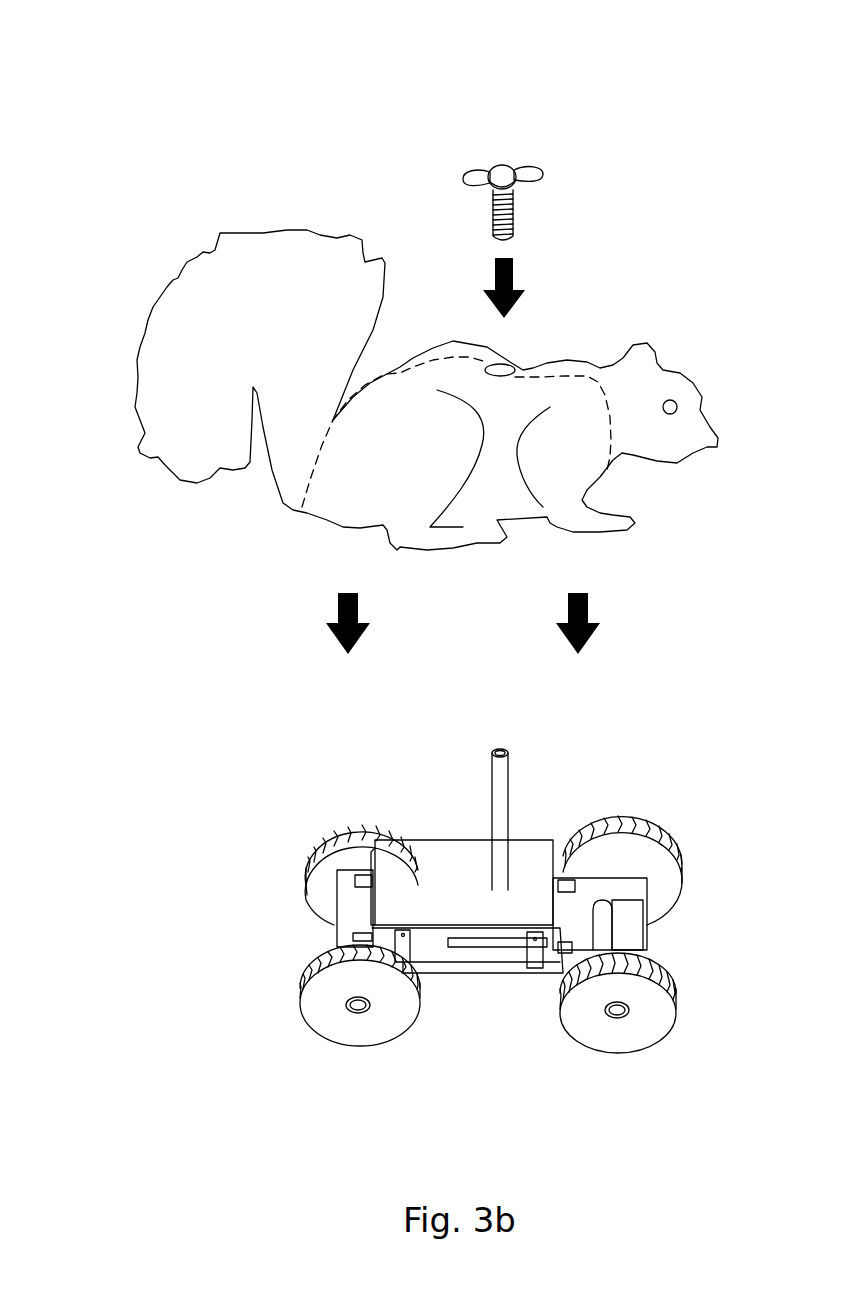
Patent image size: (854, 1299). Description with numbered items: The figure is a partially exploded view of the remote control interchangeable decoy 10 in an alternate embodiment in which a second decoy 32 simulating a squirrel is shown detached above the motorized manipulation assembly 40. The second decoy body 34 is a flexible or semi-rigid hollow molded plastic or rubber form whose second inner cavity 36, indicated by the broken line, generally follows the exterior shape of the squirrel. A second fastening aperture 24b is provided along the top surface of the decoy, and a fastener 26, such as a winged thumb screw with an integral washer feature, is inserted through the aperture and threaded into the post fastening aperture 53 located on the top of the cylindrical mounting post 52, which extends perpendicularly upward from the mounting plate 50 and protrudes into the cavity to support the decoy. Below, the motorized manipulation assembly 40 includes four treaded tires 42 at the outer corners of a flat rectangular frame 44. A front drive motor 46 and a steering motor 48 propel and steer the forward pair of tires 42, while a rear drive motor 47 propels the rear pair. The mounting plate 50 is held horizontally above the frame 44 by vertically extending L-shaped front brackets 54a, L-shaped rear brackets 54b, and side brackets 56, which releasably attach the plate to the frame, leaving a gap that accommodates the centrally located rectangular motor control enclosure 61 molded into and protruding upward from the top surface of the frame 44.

The remote control interchangeable decoy 10 is at (110, 105).
The fastener 26 is at (547, 173).
The second decoy 32 is at (235, 575).
The second decoy body 34 is at (663, 372).
The second inner cavity 36 is at (430, 360).
The second fastening aperture 24b is at (513, 367).
The motorized manipulation assembly 40 is at (222, 990).
The treaded tires 42 is at (318, 846).
The frame 44 is at (512, 965).
The front drive motor 46 is at (605, 910).
The rear drive motor 47 is at (387, 937).
The steering motor 48 is at (648, 928).
The mounting plate 50 is at (430, 845).
The mounting post 52 is at (505, 780).
The post fastening aperture 53 is at (493, 751).
The front brackets 54a is at (562, 884).
The rear brackets 54b is at (358, 938).
The side brackets 56 is at (405, 945).
The motor control enclosure 61 is at (487, 945).